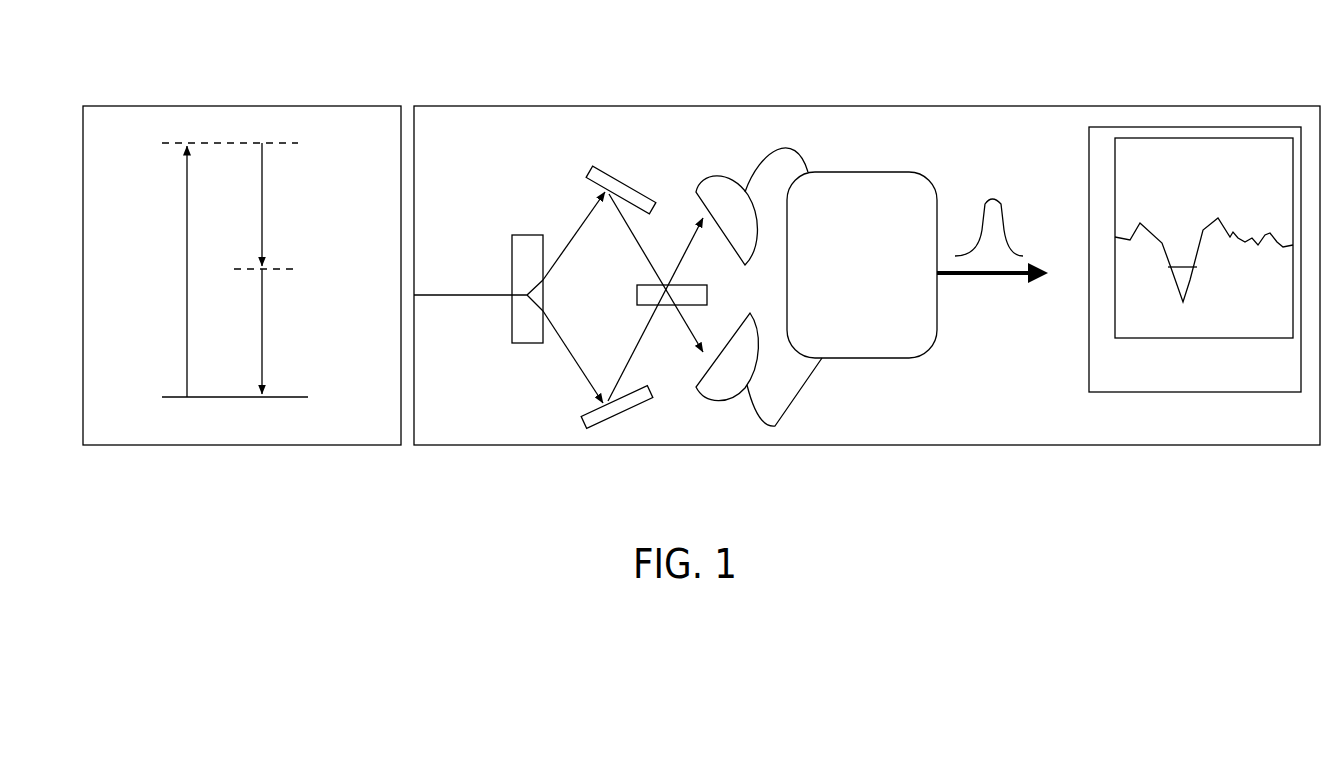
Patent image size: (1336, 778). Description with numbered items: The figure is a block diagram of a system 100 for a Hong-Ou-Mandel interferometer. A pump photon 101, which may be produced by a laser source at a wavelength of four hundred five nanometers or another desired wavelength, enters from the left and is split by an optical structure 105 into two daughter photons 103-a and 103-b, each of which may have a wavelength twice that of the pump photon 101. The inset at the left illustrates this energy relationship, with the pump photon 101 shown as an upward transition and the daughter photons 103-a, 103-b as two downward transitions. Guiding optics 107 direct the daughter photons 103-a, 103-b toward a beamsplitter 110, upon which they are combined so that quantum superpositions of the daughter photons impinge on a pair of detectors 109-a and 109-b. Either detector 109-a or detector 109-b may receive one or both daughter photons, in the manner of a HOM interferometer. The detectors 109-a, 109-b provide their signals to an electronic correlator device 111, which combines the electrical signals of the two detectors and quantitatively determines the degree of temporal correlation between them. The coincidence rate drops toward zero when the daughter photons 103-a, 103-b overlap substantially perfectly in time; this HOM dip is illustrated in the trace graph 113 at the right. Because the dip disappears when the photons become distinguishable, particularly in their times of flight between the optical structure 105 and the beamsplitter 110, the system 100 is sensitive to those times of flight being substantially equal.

The system 100 is at (512, 78).
The pump photon 101 is at (187, 281).
The daughter photon 103-a is at (262, 208).
The daughter photon 103-b is at (262, 340).
The optical structure 105 is at (512, 330).
The guiding optics 107 is at (605, 167).
The detector 109-a is at (717, 403).
The detector 109-b is at (716, 175).
The beamsplitter 110 is at (637, 295).
The electronic correlator device 111 is at (860, 172).
The trace graph 113 is at (1089, 373).